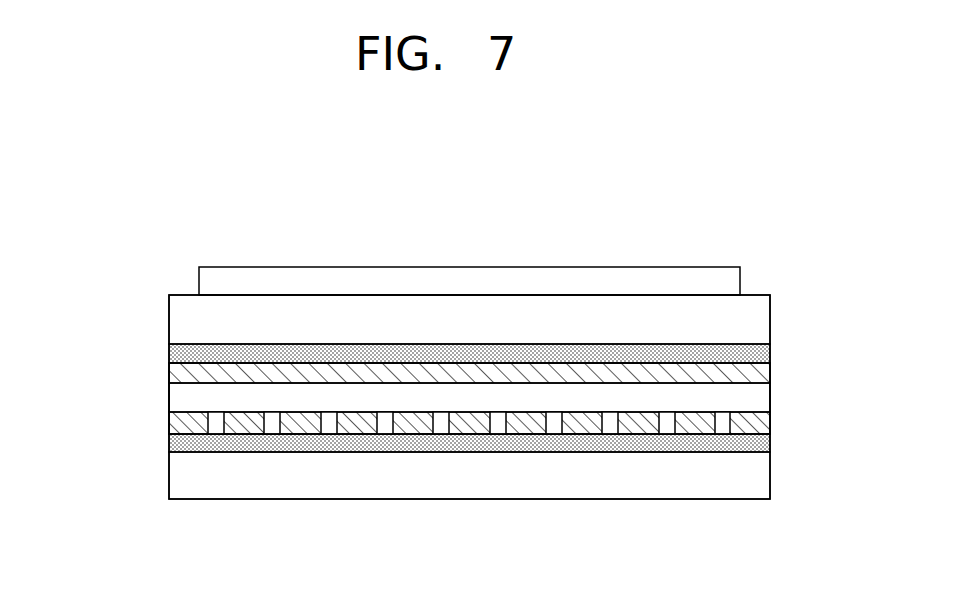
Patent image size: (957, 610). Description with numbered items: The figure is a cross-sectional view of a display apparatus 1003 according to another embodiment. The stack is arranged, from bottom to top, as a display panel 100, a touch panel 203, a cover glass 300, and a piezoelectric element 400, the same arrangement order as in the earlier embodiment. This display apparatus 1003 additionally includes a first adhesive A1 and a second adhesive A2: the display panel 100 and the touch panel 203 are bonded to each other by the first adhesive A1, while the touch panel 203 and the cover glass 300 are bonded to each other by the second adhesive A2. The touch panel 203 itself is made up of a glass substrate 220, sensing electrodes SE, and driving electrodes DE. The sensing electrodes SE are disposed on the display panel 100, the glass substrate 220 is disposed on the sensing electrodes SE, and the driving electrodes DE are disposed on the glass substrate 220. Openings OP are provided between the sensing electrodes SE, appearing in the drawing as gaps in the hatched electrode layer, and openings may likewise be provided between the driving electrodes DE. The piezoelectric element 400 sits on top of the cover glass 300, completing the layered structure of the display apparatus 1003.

The display apparatus 1003 is at (700, 212).
The piezoelectric element 400 is at (199, 277).
The cover glass 300 is at (178, 320).
The second adhesive A2 is at (770, 350).
The touch panel 203 is at (83, 368).
The driving electrodes DE is at (178, 372).
The glass substrate 220 is at (178, 397).
The sensing electrodes SE is at (178, 422).
The openings OP is at (722, 424).
The first adhesive A1 is at (770, 442).
The display panel 100 is at (178, 475).